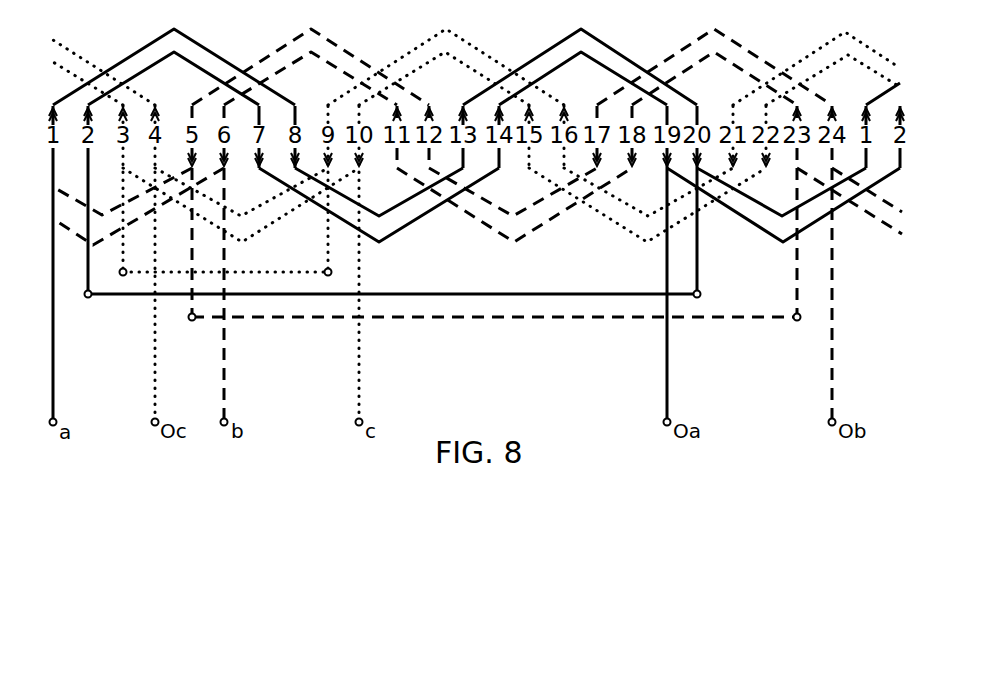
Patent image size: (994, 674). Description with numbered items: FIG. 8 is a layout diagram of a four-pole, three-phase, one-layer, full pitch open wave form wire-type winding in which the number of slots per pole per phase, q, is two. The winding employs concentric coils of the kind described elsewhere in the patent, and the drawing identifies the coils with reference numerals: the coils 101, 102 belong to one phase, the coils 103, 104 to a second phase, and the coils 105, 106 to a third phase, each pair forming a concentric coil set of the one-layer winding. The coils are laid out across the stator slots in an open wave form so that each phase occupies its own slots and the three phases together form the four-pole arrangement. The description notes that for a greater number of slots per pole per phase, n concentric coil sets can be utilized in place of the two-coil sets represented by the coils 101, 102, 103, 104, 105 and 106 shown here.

The first coil of phase a winding 101 is at (205, 42).
The second coil of phase a winding 102 is at (206, 68).
The first coil of phase b winding 103 is at (332, 41).
The second coil of phase b winding 104 is at (341, 65).
The first coil of phase c winding 105 is at (474, 45).
The second coil of phase c winding 106 is at (478, 72).